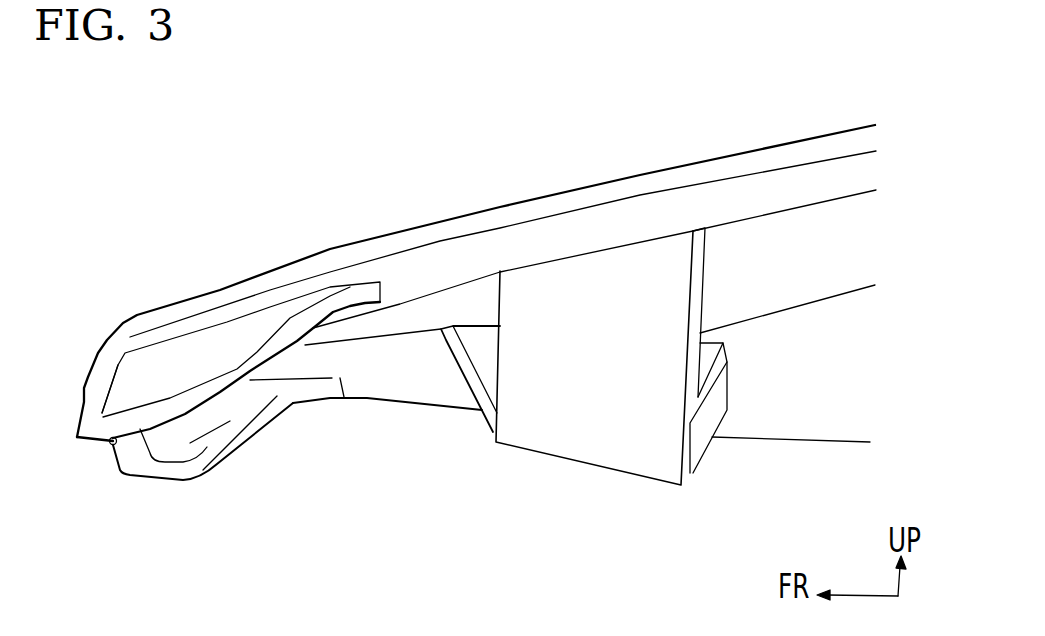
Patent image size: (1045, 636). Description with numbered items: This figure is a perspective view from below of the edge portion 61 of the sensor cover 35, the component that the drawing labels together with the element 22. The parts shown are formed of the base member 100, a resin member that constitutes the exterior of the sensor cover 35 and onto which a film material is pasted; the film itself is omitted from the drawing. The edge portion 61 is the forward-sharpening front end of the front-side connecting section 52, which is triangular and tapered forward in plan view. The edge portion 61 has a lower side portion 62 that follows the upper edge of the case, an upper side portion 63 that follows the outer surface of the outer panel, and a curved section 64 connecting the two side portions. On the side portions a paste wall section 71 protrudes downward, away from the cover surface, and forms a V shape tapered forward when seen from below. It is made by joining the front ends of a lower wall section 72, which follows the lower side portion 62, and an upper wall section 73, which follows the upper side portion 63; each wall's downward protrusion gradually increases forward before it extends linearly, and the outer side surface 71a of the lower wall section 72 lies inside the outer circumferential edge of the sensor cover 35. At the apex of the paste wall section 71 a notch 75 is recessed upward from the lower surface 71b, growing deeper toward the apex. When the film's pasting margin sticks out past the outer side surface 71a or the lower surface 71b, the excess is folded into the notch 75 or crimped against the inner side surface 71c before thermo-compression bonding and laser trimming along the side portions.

The roof side rail 22 is at (476, 220).
The sensor cover 35 is at (476, 220).
The front-side connecting section 52 is at (249, 282).
The edge portion 61 is at (476, 249).
The lower side portion 62 is at (395, 275).
The curved section 64 is at (463, 307).
The base member 100 is at (817, 173).
The lower wall section 72 is at (207, 353).
The paste wall section 71 is at (182, 509).
The outer side surface 71a is at (110, 363).
The lower surface 71b is at (152, 477).
The inner side surface 71c is at (188, 442).
The upper wall section 73 is at (223, 407).
The notch 75 is at (130, 456).
The upper side portion 63 is at (370, 390).